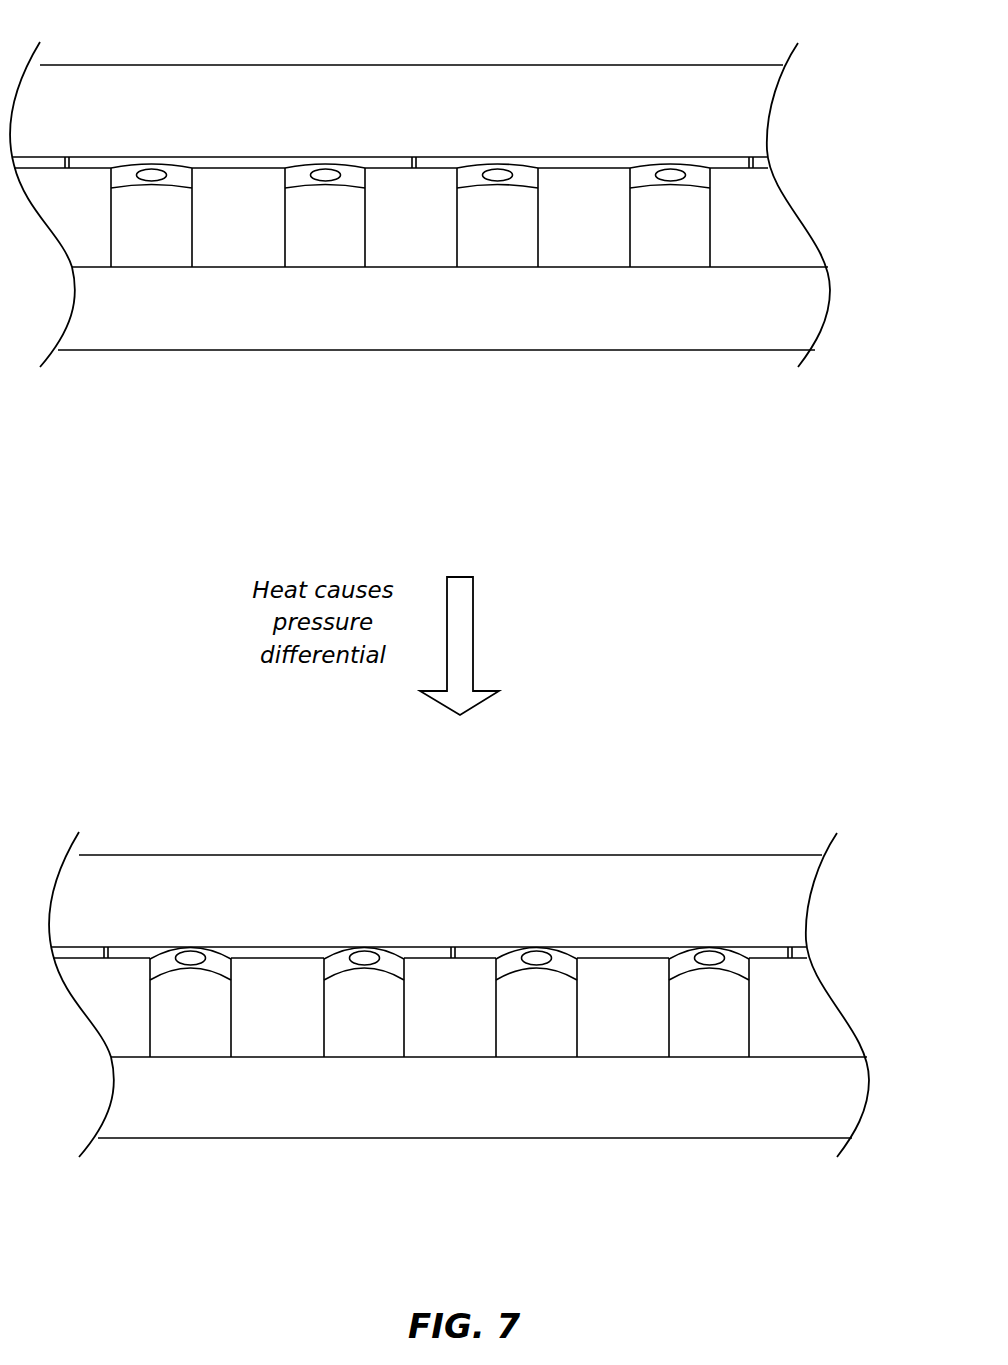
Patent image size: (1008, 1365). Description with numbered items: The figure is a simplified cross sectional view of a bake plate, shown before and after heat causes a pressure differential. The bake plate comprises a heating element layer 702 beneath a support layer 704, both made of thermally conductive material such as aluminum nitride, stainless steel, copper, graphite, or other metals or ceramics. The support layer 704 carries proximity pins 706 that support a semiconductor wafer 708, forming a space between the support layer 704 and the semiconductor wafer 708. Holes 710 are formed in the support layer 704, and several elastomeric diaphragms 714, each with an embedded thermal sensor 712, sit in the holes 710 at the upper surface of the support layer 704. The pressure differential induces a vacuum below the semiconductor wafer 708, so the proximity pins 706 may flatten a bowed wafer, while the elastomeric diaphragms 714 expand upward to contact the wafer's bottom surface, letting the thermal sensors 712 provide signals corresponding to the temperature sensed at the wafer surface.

The heating element layer 702 is at (425, 303).
The support layer 704 is at (580, 248).
The proximity pins 706 is at (767, 153).
The semiconductor wafer 708 is at (568, 92).
The holes 710 is at (152, 237).
The thermal sensor 712 is at (150, 177).
The elastomeric diaphragms 714 is at (347, 173).